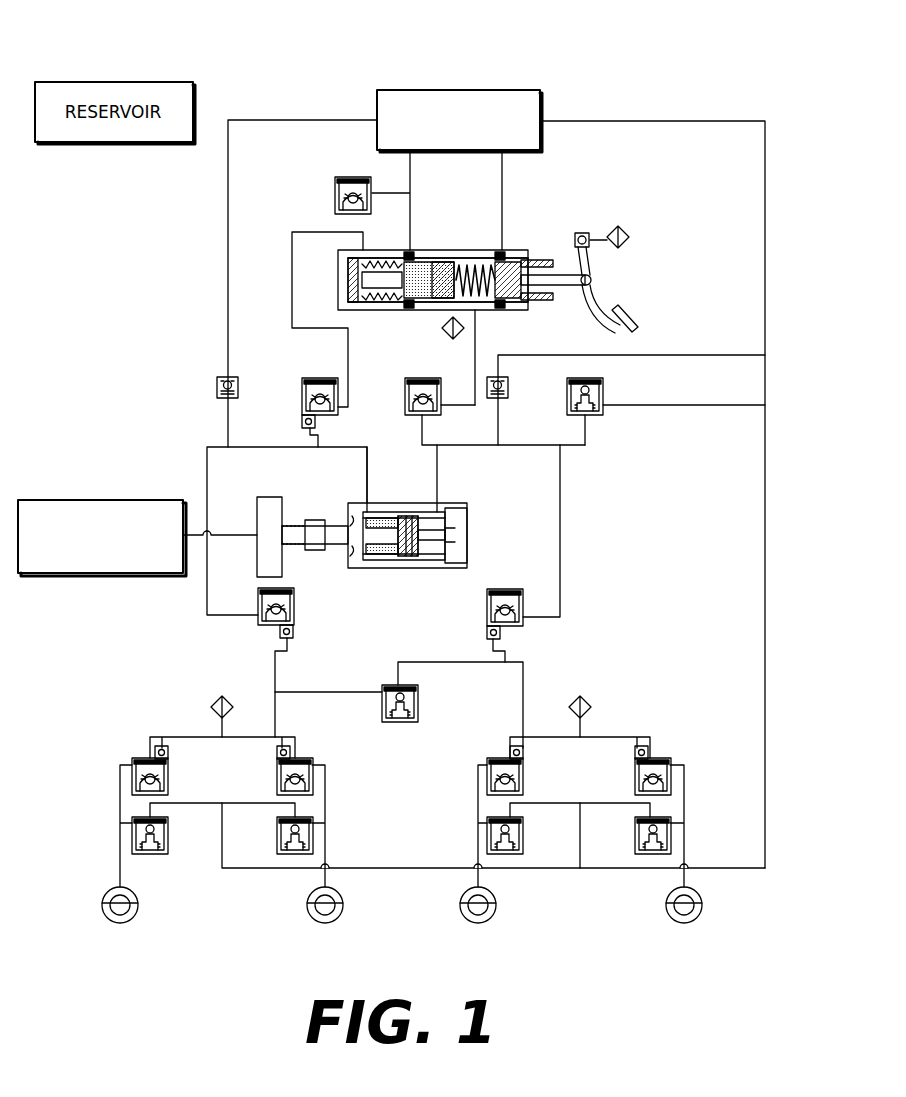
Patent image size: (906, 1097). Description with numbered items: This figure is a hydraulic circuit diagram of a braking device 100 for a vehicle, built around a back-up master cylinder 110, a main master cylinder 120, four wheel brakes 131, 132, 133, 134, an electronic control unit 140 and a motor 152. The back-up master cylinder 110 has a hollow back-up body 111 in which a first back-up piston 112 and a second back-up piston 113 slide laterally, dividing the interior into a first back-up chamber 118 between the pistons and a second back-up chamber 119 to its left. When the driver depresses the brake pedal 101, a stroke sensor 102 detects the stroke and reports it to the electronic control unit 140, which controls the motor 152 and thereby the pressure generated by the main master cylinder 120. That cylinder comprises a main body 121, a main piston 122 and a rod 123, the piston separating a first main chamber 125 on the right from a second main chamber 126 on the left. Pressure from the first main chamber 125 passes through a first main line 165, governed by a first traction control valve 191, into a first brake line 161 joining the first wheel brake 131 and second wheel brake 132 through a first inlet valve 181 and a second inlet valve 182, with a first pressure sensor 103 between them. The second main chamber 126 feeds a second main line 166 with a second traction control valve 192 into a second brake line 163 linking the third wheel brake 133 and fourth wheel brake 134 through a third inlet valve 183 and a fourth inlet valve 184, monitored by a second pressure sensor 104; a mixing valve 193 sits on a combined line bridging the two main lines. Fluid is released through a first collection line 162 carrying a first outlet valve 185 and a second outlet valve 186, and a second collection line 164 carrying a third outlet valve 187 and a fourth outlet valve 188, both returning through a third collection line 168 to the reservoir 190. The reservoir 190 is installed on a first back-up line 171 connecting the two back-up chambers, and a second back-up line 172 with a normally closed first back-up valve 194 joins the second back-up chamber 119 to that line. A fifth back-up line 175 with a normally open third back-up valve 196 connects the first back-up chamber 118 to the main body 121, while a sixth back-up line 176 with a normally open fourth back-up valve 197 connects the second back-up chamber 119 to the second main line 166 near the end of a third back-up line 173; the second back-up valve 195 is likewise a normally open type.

The braking device 100 is at (158, 26).
The brake pedal 101 is at (595, 295).
The stroke sensor 102 is at (622, 226).
The first pressure sensor 103 is at (588, 698).
The second pressure sensor 104 is at (212, 700).
The back-up master cylinder 110 is at (530, 235).
The back-up body 111 is at (480, 250).
The first back-up piston 112 is at (550, 262).
The second back-up piston 113 is at (409, 252).
The first back-up chamber 118 is at (465, 268).
The second back-up chamber 119 is at (380, 262).
The main master cylinder 120 is at (475, 520).
The main body 121 is at (385, 510).
The main piston 122 is at (405, 514).
The rod 123 is at (297, 526).
The first main chamber 125 is at (433, 560).
The second main chamber 126 is at (378, 556).
The first wheel brake 131 is at (493, 918).
The second wheel brake 132 is at (667, 918).
The third wheel brake 133 is at (137, 918).
The fourth wheel brake 134 is at (307, 918).
The electronic control unit 140 is at (142, 500).
The motor 152 is at (262, 497).
The first brake line 161 is at (684, 803).
The first collection line 162 is at (538, 805).
The second brake line 163 is at (120, 808).
The second collection line 164 is at (178, 805).
The first main line 165 is at (565, 575).
The second main line 166 is at (207, 593).
The third collection line 168 is at (600, 121).
The first back-up line 171 is at (502, 175).
The second back-up line 172 is at (392, 193).
The third back-up line 173 is at (362, 120).
The fifth back-up line 175 is at (478, 345).
The sixth back-up line 176 is at (292, 240).
The first inlet valve 181 is at (495, 758).
The second inlet valve 182 is at (657, 758).
The third inlet valve 183 is at (140, 758).
The fourth inlet valve 184 is at (300, 758).
The first outlet valve 185 is at (505, 854).
The second outlet valve 186 is at (650, 854).
The third outlet valve 187 is at (150, 854).
The fourth outlet valve 188 is at (295, 854).
The reservoir 190 is at (485, 90).
The first traction control valve 191 is at (523, 622).
The second traction control valve 192 is at (258, 605).
The mixing valve 193 is at (400, 722).
The first back-up valve 194 is at (335, 193).
The second back-up valve 195 is at (603, 398).
The third back-up valve 196 is at (418, 378).
The fourth back-up valve 197 is at (302, 392).